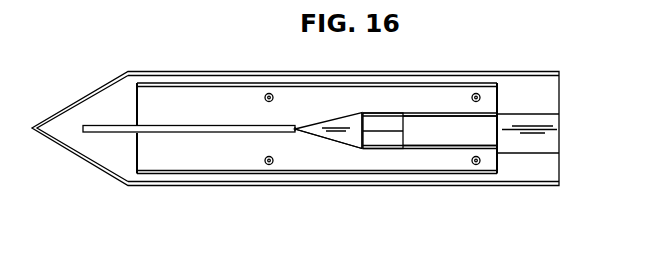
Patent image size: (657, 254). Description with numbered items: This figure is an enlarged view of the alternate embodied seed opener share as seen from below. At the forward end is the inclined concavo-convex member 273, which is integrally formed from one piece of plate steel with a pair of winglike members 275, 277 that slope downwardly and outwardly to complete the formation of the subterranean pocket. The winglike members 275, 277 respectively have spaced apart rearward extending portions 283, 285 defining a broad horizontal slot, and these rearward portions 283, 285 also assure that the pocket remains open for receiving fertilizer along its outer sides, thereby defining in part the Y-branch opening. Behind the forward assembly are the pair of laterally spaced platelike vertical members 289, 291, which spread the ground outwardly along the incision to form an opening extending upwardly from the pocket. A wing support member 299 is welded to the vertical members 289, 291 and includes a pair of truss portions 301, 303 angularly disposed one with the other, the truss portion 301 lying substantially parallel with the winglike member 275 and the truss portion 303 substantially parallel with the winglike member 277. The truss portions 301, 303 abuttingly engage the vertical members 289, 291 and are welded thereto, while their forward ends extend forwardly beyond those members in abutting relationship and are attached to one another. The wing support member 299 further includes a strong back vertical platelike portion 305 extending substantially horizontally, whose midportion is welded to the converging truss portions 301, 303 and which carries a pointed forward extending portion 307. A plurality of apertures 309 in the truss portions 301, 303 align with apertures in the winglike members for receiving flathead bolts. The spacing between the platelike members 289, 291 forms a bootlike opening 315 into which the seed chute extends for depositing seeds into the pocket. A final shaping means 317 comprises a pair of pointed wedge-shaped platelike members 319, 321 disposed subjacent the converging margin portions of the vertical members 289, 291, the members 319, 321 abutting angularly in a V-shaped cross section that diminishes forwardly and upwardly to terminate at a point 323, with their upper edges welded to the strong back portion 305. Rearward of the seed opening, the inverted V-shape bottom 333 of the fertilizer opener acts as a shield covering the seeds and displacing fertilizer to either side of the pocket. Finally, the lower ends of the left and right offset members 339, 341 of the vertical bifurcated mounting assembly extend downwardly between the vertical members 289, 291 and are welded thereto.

The inclined concavo-convex member 273 is at (96, 147).
The winglike member 275 is at (220, 80).
The winglike member 277 is at (223, 178).
The rearward extending portion 283 is at (527, 90).
The rearward extending portion 285 is at (540, 172).
The platelike vertical member 289 is at (432, 112).
The platelike vertical member 291 is at (432, 148).
The wing support member 299 is at (168, 102).
The truss portion 301 is at (213, 115).
The truss portion 303 is at (213, 164).
The strong back vertical platelike portion 305 is at (157, 131).
The pointed forward extending portion 307 is at (107, 127).
The apertures 309 is at (269, 93).
The bootlike opening 315 is at (430, 131).
The final shaping means 317 is at (340, 118).
The pointed wedge-shaped platelike member 319 is at (358, 117).
The pointed wedge-shaped platelike member 321 is at (352, 142).
The point 323 is at (298, 129).
The inverted V-shape bottom 333 is at (552, 118).
The left offset member 339 is at (385, 119).
The right offset member 341 is at (386, 137).